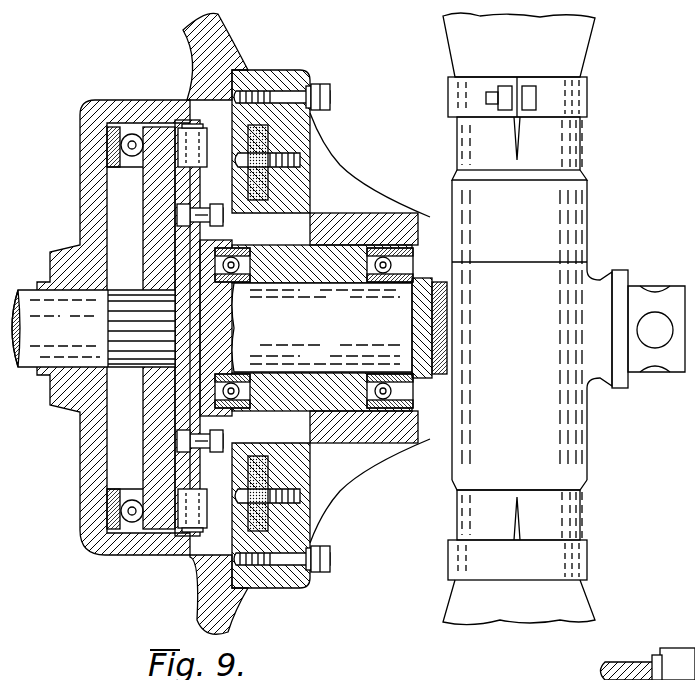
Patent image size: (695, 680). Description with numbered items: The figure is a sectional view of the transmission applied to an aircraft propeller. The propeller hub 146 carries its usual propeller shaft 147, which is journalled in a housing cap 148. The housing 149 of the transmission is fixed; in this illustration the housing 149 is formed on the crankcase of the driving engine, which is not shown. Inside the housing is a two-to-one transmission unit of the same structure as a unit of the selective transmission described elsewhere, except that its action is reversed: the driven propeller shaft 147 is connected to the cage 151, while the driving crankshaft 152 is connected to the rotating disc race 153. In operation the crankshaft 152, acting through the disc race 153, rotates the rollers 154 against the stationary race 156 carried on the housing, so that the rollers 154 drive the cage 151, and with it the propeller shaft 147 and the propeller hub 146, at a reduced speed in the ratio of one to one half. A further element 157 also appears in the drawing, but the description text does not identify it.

The propeller hub 146 is at (572, 241).
The propeller shaft 147 is at (368, 323).
The housing cap 148 is at (352, 220).
The housing 149 is at (243, 67).
The cage 151 is at (172, 155).
The crankshaft 152 is at (68, 320).
The disc race 153 is at (163, 192).
The rollers 154 is at (165, 528).
The stationary race 156 is at (188, 563).
The bolt 157 is at (626, 662).